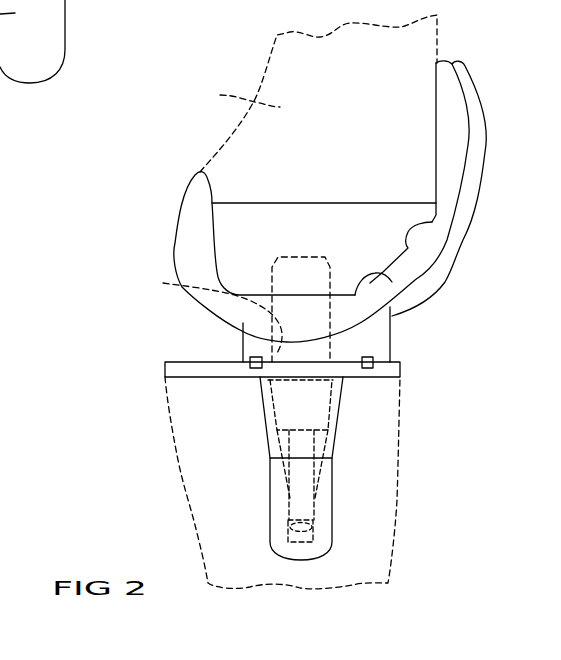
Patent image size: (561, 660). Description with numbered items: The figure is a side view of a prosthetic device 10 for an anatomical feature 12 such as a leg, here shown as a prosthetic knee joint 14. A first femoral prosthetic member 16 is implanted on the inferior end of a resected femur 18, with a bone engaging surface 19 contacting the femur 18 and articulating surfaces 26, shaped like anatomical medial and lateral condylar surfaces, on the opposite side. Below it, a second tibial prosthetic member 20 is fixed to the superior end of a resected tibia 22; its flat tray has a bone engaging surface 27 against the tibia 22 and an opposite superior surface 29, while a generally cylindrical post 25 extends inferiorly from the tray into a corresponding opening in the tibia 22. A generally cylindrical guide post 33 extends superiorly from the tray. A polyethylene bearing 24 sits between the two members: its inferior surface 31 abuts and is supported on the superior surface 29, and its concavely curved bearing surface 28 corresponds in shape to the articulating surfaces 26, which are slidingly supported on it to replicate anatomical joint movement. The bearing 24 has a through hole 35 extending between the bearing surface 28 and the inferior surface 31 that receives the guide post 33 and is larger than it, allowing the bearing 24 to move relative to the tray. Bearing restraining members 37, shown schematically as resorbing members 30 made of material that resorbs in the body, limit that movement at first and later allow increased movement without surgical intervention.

The prosthetic device 10 is at (115, 237).
The anatomical feature 12 is at (238, 76).
The prosthetic knee joint 14 is at (160, 333).
The first femoral prosthetic member 16 is at (197, 195).
The resected femur 18 is at (238, 95).
The bone engaging surface 19 is at (430, 227).
The second tibial prosthetic member 20 is at (182, 368).
The resected tibia 22 is at (218, 512).
The bearing 24 is at (372, 333).
The post 25 is at (332, 477).
The articulating surfaces 26 is at (416, 288).
The bone engaging surface 27 is at (185, 377).
The bearing surface 28 is at (375, 271).
The superior surface 29 is at (197, 362).
The resorbing members 30 is at (253, 357).
The inferior surface 31 is at (350, 368).
The guide post 33 is at (288, 257).
The through hole 35 is at (209, 312).
The bearing restraining members 37 is at (237, 379).